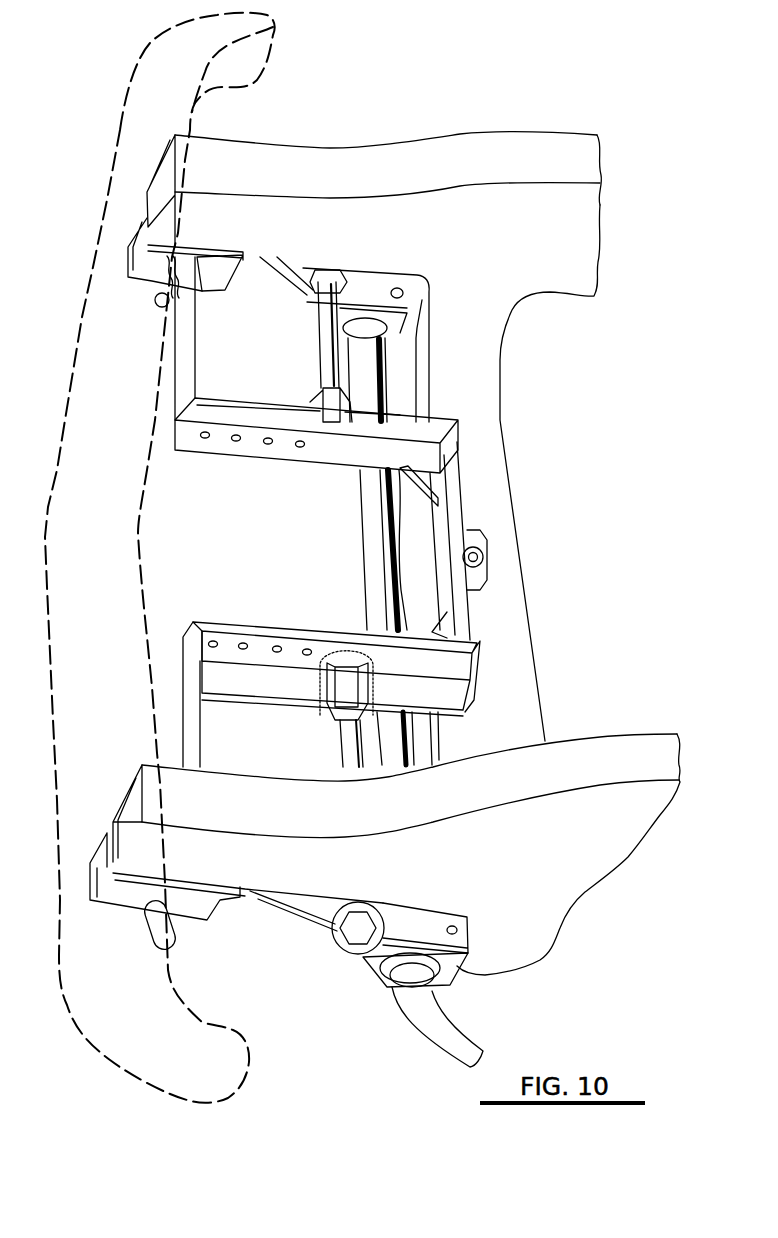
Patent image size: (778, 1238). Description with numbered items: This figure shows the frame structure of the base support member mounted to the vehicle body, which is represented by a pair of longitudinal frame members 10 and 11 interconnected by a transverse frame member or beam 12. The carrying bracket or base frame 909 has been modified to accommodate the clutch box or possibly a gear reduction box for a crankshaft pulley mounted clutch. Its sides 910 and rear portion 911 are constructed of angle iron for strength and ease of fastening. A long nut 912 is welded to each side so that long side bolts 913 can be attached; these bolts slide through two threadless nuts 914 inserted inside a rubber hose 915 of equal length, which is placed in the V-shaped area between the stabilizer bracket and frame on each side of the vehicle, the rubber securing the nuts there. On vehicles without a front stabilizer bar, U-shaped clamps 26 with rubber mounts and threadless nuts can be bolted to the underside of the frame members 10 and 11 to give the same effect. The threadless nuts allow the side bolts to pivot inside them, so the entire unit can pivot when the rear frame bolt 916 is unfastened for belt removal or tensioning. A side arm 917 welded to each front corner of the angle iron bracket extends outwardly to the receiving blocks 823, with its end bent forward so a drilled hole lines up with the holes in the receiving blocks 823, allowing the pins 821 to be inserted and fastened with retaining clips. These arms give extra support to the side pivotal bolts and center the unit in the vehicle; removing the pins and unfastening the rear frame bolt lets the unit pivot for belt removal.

The longitudinal frame member 10 is at (334, 150).
The longitudinal frame member 11 is at (264, 793).
The transverse frame member or beam 12 is at (480, 410).
The U-shaped clamp 26 is at (382, 952).
The receiving block pin 821 is at (160, 298).
The receiving block 823 is at (127, 262).
The carrying bracket or base frame 909 is at (284, 466).
The side 910 is at (327, 460).
The rear portion 911 is at (450, 522).
The long nut 912 is at (329, 405).
The long side bolt 913 is at (320, 325).
The threadless nut 914 is at (330, 272).
The rubber hose 915 is at (345, 270).
The rear frame bolt 916 is at (480, 556).
The side arm 917 is at (160, 558).